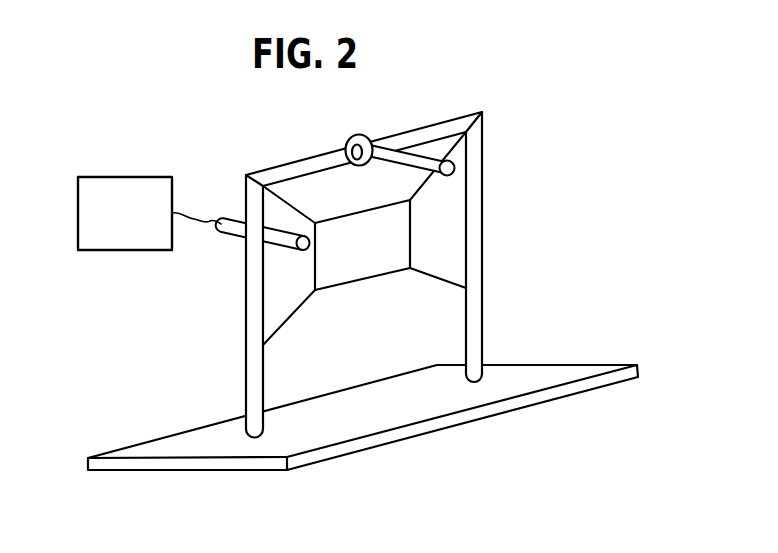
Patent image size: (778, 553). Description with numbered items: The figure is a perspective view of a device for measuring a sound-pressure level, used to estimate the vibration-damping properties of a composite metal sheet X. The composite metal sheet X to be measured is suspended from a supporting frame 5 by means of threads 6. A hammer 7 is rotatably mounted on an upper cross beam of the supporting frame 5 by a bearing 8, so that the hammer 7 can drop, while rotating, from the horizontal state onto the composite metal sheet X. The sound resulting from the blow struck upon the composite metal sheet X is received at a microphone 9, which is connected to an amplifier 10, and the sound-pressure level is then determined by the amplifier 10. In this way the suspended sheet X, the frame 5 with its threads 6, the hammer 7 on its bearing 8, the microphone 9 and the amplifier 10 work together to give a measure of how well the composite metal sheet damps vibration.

The supporting frame 5 is at (255, 373).
The threads 6 is at (283, 199).
The hammer 7 is at (456, 161).
The bearing 8 is at (352, 135).
The microphone 9 is at (229, 224).
The amplifier 10 is at (125, 197).
The composite metal sheet X is at (368, 262).